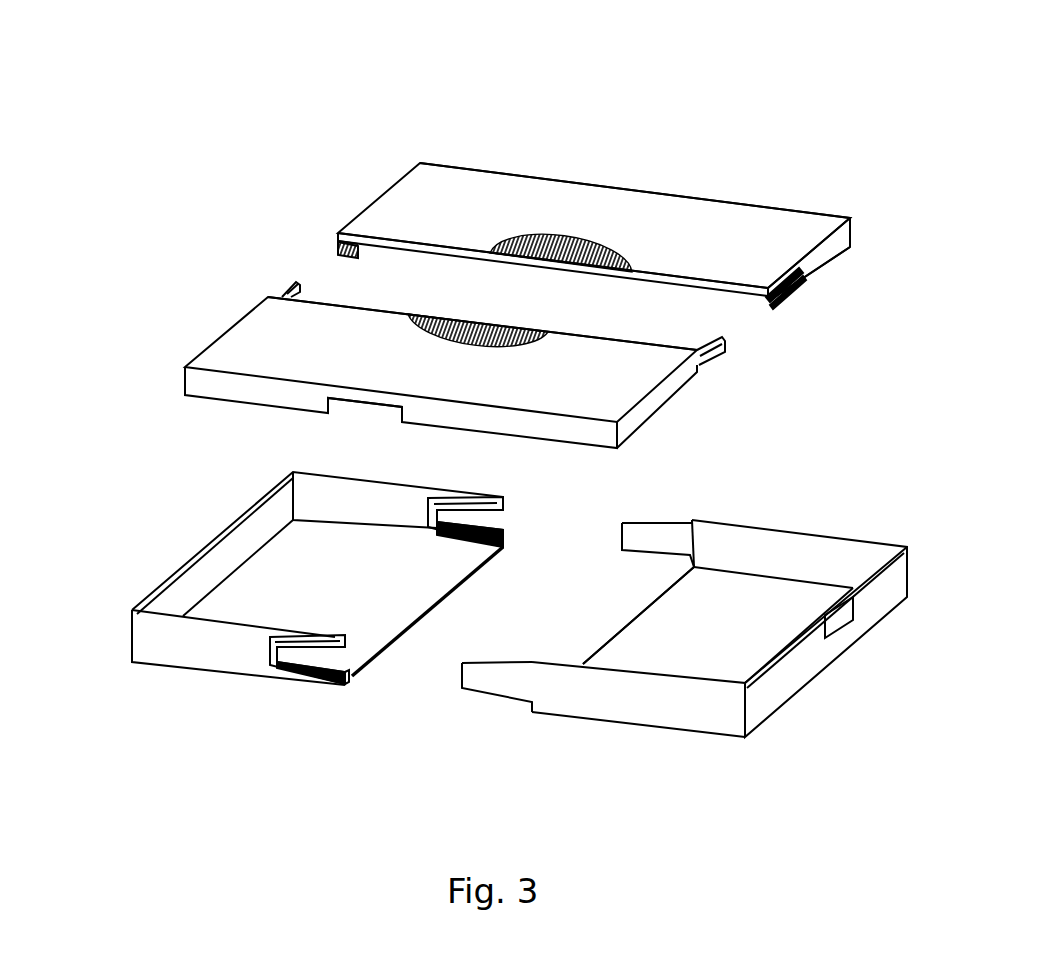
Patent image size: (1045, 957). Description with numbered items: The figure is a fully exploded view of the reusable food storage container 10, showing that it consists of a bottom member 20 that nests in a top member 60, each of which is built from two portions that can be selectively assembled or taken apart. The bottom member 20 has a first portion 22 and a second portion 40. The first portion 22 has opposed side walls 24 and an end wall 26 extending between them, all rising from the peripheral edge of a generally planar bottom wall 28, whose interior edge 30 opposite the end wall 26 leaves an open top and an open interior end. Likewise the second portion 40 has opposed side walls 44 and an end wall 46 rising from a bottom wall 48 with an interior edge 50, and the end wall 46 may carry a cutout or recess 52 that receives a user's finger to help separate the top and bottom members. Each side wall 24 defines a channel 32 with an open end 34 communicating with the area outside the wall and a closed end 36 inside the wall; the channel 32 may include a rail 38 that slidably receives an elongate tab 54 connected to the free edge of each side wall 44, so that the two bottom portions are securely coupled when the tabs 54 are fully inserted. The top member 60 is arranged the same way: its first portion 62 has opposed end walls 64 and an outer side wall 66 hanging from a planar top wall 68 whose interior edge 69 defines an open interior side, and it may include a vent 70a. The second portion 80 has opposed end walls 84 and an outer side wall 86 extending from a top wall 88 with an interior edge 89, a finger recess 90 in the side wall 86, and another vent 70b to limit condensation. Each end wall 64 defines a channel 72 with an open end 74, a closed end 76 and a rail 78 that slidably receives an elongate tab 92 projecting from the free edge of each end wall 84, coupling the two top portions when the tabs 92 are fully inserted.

The food storage container 10 is at (236, 68).
The bottom member 20 is at (388, 781).
The first portion of bottom member 22 is at (158, 518).
The side walls 24 is at (165, 651).
The end wall 26 is at (261, 528).
The bottom wall 28 is at (244, 588).
The interior edge 30 is at (455, 606).
The channel 32 is at (472, 514).
The open end 34 is at (502, 520).
The closed end 36 is at (441, 522).
The rail 38 is at (478, 538).
The second portion of bottom member 40 is at (820, 512).
The side walls 44 is at (818, 557).
The end wall 46 is at (780, 684).
The bottom wall 48 is at (679, 617).
The interior edge 50 is at (602, 643).
The recess 52 is at (843, 624).
The tab 54 is at (347, 663).
The top member 60 is at (238, 244).
The first portion of top member 62 is at (469, 157).
The end walls 64 is at (832, 249).
The outer side wall 66 is at (527, 170).
The top wall 68 is at (683, 206).
The interior edge 69 is at (413, 240).
The vent 70a is at (574, 236).
The vent 70b is at (462, 316).
The channel 72 is at (336, 247).
The open end 74 is at (772, 308).
The closed end 76 is at (805, 283).
The rail 78 is at (781, 285).
The second portion of top member 80 is at (204, 332).
The end walls 84 is at (635, 416).
The outer side wall 86 is at (230, 390).
The top wall 88 is at (272, 318).
The interior edge 89 is at (362, 307).
The recess 90 is at (362, 403).
The tab 92 is at (291, 283).